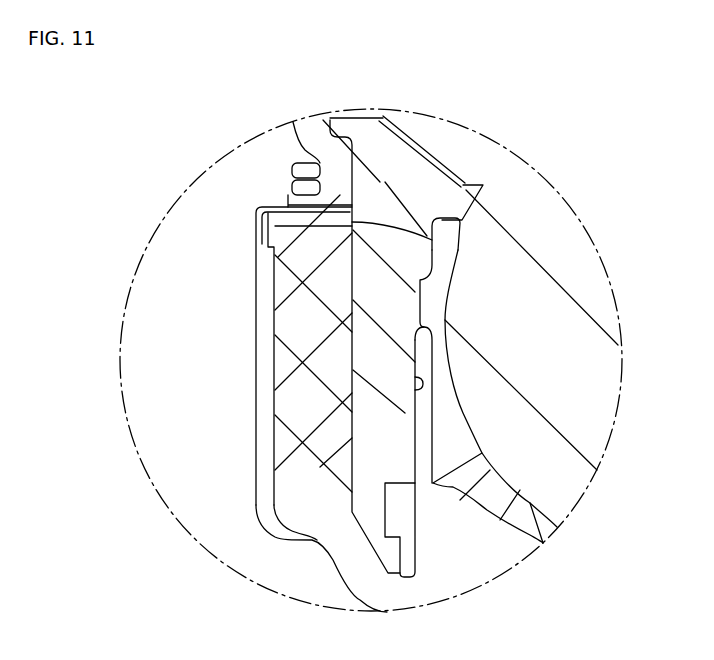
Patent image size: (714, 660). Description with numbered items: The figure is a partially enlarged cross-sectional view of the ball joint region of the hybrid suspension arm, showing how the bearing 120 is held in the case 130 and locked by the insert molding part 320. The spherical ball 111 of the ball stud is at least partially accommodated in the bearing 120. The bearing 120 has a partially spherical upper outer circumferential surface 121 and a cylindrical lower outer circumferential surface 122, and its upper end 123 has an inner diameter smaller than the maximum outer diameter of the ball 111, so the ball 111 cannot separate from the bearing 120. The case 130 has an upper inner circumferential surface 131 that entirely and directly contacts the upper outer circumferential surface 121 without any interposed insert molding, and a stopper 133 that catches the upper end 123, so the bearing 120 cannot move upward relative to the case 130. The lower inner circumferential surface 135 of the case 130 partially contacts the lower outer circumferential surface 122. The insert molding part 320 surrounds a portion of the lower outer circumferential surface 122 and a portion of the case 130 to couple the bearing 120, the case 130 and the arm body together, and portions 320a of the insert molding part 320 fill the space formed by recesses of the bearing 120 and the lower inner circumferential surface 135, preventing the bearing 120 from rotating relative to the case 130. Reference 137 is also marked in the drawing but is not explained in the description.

The ball 111 is at (563, 237).
The bearing 120 is at (435, 287).
The upper outer circumferential surface 121 is at (297, 227).
The lower outer circumferential surface 122 is at (421, 417).
The upper end 123 is at (467, 190).
The case 130 is at (380, 429).
The upper inner circumferential surface 131 is at (418, 277).
The stopper 133 is at (448, 194).
The lower inner circumferential surface 135 is at (413, 400).
The hatched body 137 is at (350, 327).
The insert molding part 320 is at (297, 347).
The portions of the insert molding part 320a is at (350, 440).